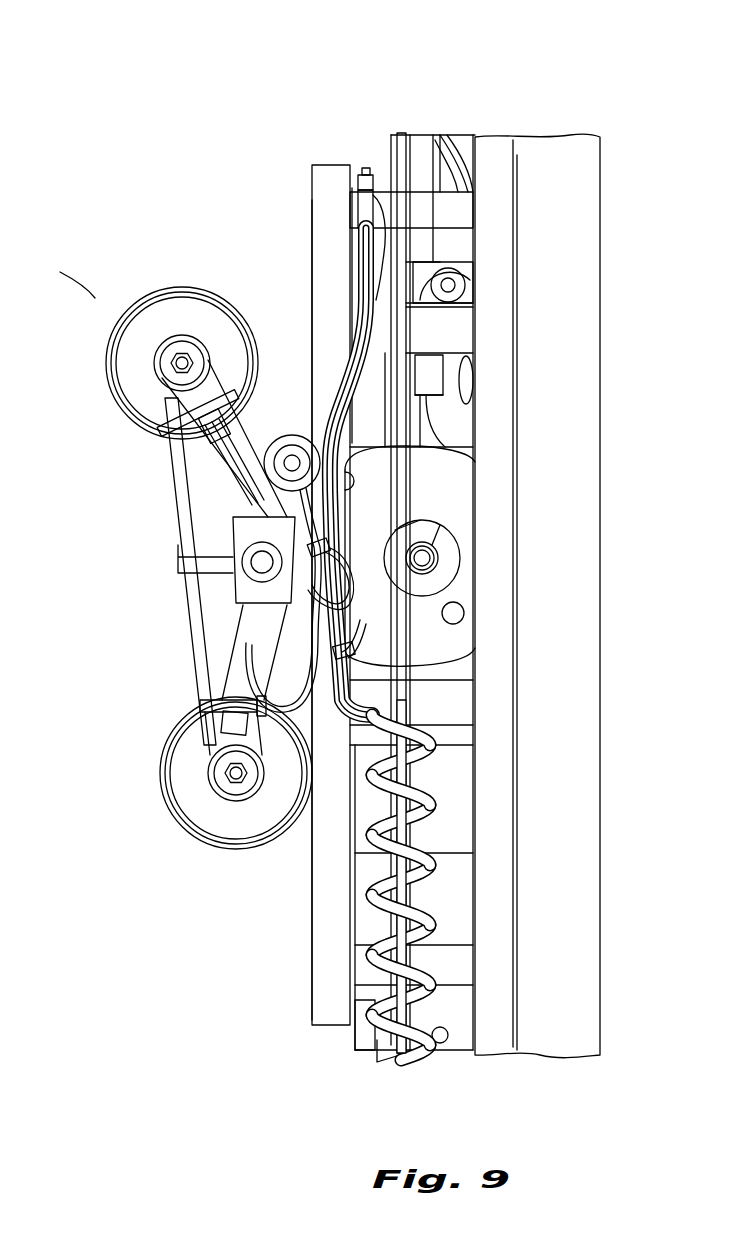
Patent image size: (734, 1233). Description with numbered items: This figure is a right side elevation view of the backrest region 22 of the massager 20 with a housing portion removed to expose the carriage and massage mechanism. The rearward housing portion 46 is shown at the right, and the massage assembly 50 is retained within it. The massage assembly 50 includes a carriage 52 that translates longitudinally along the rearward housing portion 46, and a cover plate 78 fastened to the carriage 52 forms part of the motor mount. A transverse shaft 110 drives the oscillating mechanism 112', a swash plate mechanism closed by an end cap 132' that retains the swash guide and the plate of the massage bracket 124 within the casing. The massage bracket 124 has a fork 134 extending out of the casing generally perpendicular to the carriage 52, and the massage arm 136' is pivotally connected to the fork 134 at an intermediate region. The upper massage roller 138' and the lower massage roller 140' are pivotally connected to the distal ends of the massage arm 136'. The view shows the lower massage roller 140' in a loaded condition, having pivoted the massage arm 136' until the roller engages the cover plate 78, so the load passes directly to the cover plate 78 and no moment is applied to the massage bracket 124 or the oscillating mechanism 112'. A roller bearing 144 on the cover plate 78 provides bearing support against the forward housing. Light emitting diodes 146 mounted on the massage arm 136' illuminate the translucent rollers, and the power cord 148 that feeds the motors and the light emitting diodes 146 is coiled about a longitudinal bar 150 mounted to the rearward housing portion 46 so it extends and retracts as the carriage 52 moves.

The cleaning assembly 20 is at (378, 55).
The backrest region 22 is at (402, 93).
The rearward housing portion 46 is at (600, 200).
The massage assembly 50 is at (62, 279).
The carriage 52 is at (331, 166).
The cover plate 78 is at (320, 210).
The transverse shaft 110 is at (423, 558).
The oscillating mechanism 112' is at (511, 545).
The massage bracket 124 is at (228, 578).
The end cap 132' is at (543, 525).
The fork 134 is at (250, 597).
The massage arm 136' is at (132, 571).
The upper massage roller 138' is at (145, 374).
The lower massage roller 140' is at (171, 780).
The roller bearing 144 is at (262, 470).
The light emitting diodes 146 is at (190, 430).
The power cord 148 is at (388, 962).
The longitudinal bar 150 is at (380, 882).